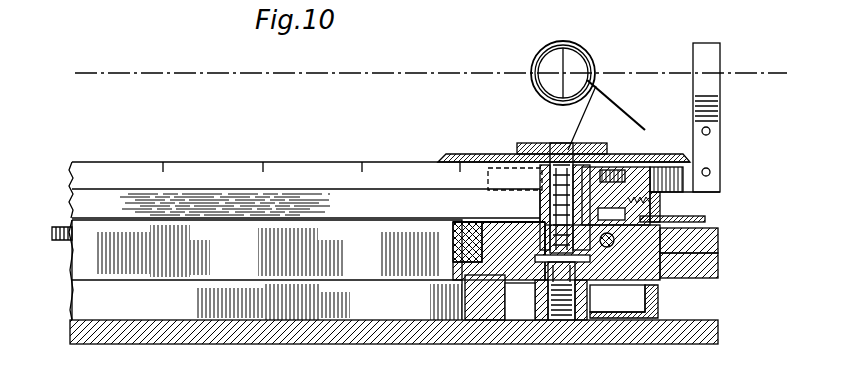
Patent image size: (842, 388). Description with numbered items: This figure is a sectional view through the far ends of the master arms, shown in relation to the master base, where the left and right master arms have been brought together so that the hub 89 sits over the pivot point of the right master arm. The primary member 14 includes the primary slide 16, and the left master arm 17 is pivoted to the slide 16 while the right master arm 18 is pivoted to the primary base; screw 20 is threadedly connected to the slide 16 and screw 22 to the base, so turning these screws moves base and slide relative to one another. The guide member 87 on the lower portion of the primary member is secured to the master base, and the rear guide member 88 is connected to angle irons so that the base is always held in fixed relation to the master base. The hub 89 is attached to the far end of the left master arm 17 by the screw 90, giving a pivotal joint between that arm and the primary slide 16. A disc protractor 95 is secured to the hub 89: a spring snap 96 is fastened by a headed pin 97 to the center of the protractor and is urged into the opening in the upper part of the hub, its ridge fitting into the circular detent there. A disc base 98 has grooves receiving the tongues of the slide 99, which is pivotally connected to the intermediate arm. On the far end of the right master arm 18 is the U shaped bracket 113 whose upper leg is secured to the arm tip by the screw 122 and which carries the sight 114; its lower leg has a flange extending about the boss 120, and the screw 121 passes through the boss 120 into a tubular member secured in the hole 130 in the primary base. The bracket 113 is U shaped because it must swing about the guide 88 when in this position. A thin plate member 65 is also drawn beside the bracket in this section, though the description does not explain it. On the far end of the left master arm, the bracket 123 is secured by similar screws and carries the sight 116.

The primary member 14 is at (265, 270).
The primary slide 16 is at (452, 241).
The left master arm 17 is at (275, 161).
The right master arm 18 is at (640, 168).
The screw 20 is at (720, 246).
The screw 22 is at (470, 259).
The plate 65 is at (700, 219).
The guide member 87 is at (339, 345).
The rear guide member 88 is at (700, 262).
The hub 89 is at (545, 209).
The screw 90 is at (500, 222).
The disc protractor 95 is at (448, 156).
The spring snap 96 is at (540, 184).
The headed pin 97 is at (558, 162).
The disc base 98 is at (520, 144).
The slide 99 is at (615, 110).
The U shaped bracket 113 is at (660, 298).
The sight 114 is at (568, 41).
The sight 116 is at (717, 52).
The boss 120 is at (520, 308).
The screw 121 is at (553, 312).
The screw 122 is at (662, 207).
The bracket 123 is at (687, 166).
The hole 130 is at (617, 298).